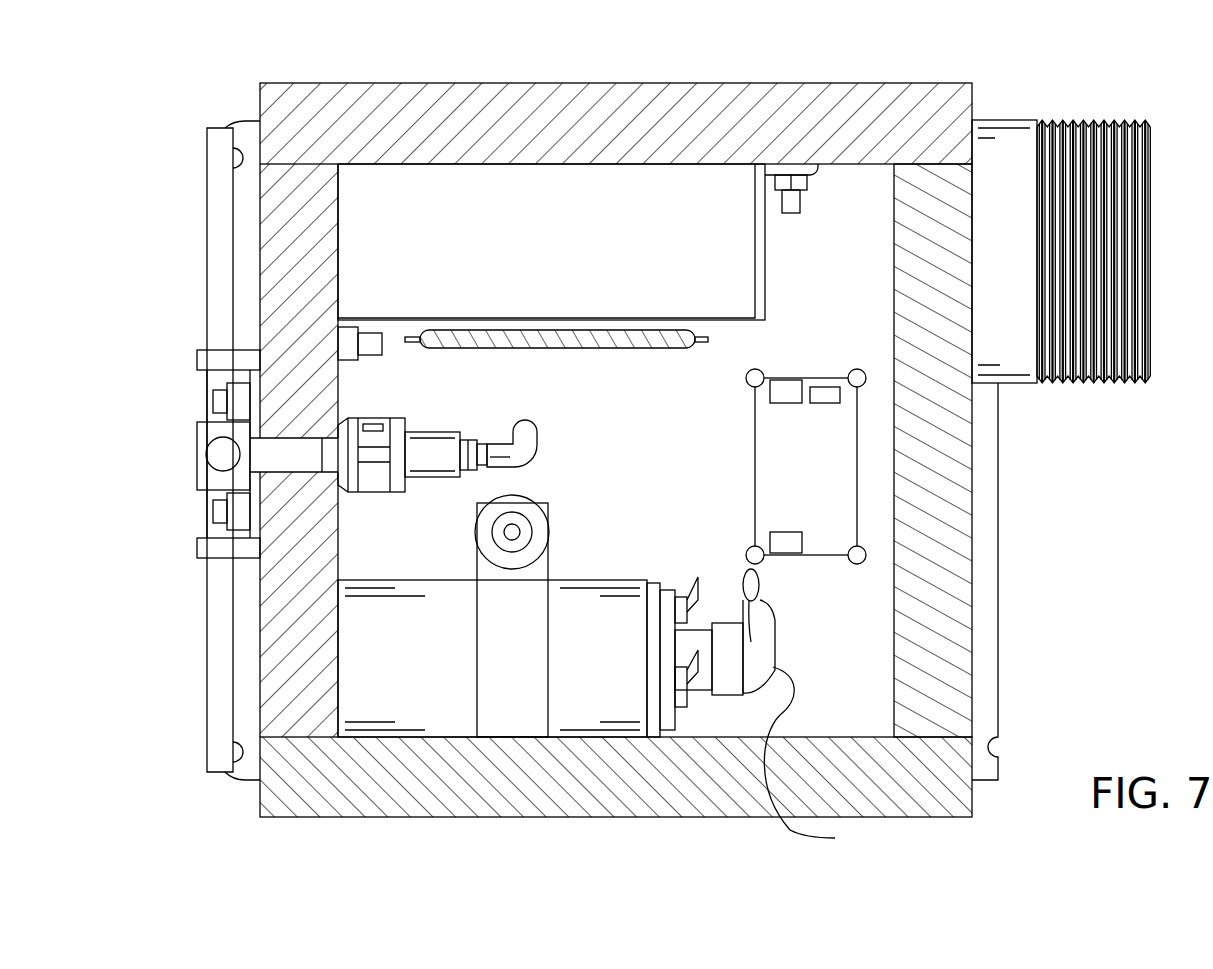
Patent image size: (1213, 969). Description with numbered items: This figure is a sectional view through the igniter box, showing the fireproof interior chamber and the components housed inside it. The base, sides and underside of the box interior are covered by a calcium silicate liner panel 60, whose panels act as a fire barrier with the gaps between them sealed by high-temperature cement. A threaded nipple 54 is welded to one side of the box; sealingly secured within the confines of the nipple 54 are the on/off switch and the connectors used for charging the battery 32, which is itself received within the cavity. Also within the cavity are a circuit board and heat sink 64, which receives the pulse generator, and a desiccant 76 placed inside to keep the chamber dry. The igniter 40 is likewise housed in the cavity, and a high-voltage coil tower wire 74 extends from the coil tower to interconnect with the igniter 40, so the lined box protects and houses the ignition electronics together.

The battery 32 is at (437, 208).
The calcium silicate liner panel 60 is at (752, 100).
The threaded nipple 54 is at (1100, 120).
The igniter 40 is at (197, 455).
The desiccant 76 is at (592, 348).
The circuit board and heat sink 64 is at (857, 494).
The high-voltage coil tower wire 74 is at (804, 710).